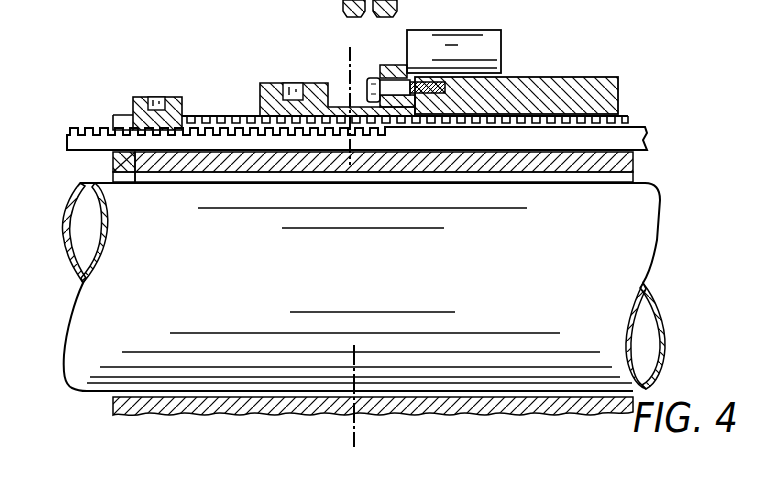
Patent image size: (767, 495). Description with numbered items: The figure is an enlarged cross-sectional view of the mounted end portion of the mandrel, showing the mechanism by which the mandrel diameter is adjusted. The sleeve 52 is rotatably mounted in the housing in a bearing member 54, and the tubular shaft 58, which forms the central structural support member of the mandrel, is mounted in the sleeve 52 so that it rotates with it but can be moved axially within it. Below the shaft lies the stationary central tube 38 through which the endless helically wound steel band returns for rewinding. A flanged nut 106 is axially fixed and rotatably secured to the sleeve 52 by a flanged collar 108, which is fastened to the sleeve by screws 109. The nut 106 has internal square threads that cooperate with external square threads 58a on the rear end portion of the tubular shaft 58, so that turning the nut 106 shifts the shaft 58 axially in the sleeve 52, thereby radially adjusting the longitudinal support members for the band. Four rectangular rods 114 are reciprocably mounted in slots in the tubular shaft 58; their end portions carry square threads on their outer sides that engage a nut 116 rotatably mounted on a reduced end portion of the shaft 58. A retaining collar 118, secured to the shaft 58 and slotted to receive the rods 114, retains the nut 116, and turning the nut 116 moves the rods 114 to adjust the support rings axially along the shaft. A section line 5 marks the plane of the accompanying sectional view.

The section line 5- 5 is at (348, 60).
The stationary central tube 38 is at (215, 290).
The sleeve 52 is at (624, 76).
The bearing member 54 is at (501, 30).
The tubular shaft 58 is at (633, 158).
The external square threads 58a is at (600, 112).
The flanged nut 106 is at (260, 83).
The flanged collar 108 is at (393, 65).
The screws 109 is at (368, 76).
The rectangular rods 114 is at (90, 130).
The nut 116 is at (133, 97).
The retaining collar 118 is at (113, 163).